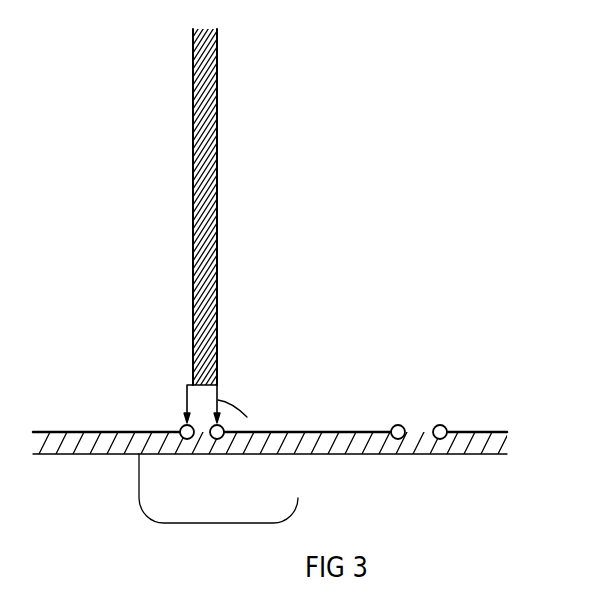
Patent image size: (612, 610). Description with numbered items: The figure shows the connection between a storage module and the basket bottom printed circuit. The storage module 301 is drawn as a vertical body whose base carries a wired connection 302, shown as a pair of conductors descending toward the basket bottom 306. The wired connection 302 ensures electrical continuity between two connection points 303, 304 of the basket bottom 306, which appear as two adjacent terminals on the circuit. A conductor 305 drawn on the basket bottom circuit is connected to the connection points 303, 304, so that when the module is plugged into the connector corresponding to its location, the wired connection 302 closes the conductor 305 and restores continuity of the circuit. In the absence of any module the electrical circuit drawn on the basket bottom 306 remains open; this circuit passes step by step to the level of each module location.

The storage module 301 is at (203, 236).
The wired connection 302 is at (218, 384).
The connection point 303 is at (187, 439).
The connection point 304 is at (217, 439).
The conductor 305 is at (300, 432).
The basket bottom 306 is at (116, 447).